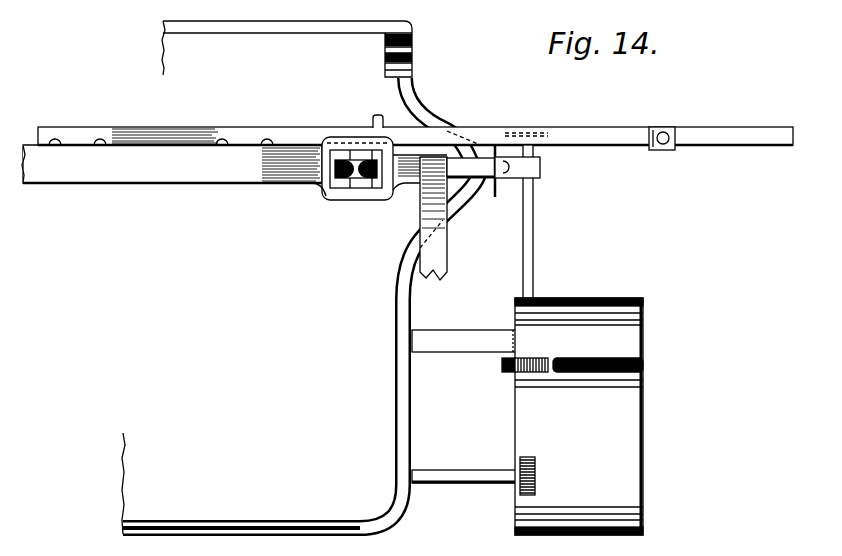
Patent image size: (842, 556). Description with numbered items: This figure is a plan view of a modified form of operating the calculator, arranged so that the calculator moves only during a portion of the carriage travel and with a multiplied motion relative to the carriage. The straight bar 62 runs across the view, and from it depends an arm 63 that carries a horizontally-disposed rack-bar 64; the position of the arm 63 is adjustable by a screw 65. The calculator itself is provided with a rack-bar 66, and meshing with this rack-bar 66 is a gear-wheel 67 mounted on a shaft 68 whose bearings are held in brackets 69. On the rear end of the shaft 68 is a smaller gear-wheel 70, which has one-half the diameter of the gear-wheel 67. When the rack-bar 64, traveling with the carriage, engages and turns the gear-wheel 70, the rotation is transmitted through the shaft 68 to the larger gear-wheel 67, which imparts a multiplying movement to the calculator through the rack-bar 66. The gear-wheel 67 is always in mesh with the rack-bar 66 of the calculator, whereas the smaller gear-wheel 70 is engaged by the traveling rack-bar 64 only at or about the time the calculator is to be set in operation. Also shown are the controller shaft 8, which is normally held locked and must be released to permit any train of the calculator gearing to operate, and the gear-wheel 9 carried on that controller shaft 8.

The controller shaft 8 is at (462, 485).
The gear-wheel 9 is at (522, 492).
The bar 62 is at (415, 127).
The arm 63 is at (664, 150).
The rack-bar 64 is at (620, 142).
The screw 65 is at (668, 130).
The rack-bar 66 is at (579, 416).
The gear-wheel 67 is at (512, 373).
The shaft 68 is at (523, 263).
The brackets 69 is at (519, 182).
The gear-wheel 70 is at (533, 135).